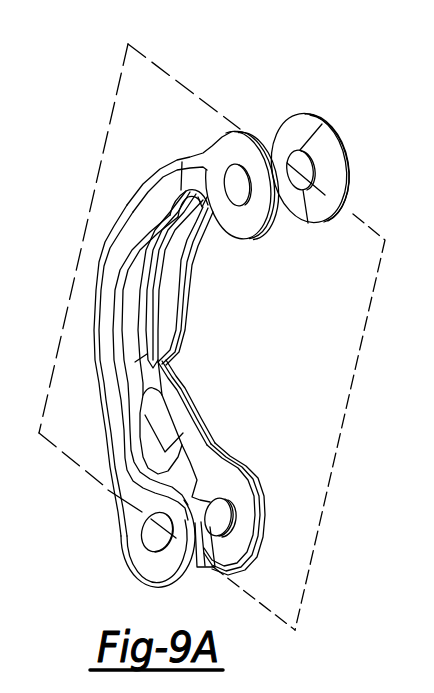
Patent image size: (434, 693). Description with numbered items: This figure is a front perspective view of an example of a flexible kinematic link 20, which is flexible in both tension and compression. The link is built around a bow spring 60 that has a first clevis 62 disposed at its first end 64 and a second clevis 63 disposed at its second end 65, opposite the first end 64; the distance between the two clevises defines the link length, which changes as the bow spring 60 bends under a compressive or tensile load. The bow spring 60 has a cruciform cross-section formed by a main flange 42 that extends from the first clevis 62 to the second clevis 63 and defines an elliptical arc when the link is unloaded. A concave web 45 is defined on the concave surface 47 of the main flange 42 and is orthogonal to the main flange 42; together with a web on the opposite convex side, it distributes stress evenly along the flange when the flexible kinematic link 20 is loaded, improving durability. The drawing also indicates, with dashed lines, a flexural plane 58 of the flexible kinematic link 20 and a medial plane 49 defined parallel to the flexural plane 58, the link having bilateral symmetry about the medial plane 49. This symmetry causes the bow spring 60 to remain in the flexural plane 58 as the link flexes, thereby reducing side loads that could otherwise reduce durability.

The flexible kinematic link 20 is at (318, 97).
The main flange 42 is at (178, 345).
The concave web 45 is at (150, 300).
The concave surface 47 is at (116, 325).
The medial plane 49 is at (338, 310).
The flexural plane 58 is at (125, 177).
The bow spring 60 is at (181, 327).
The first clevis 62 is at (350, 150).
The second clevis 63 is at (258, 508).
The first end 64 is at (182, 162).
The second end 65 is at (107, 413).